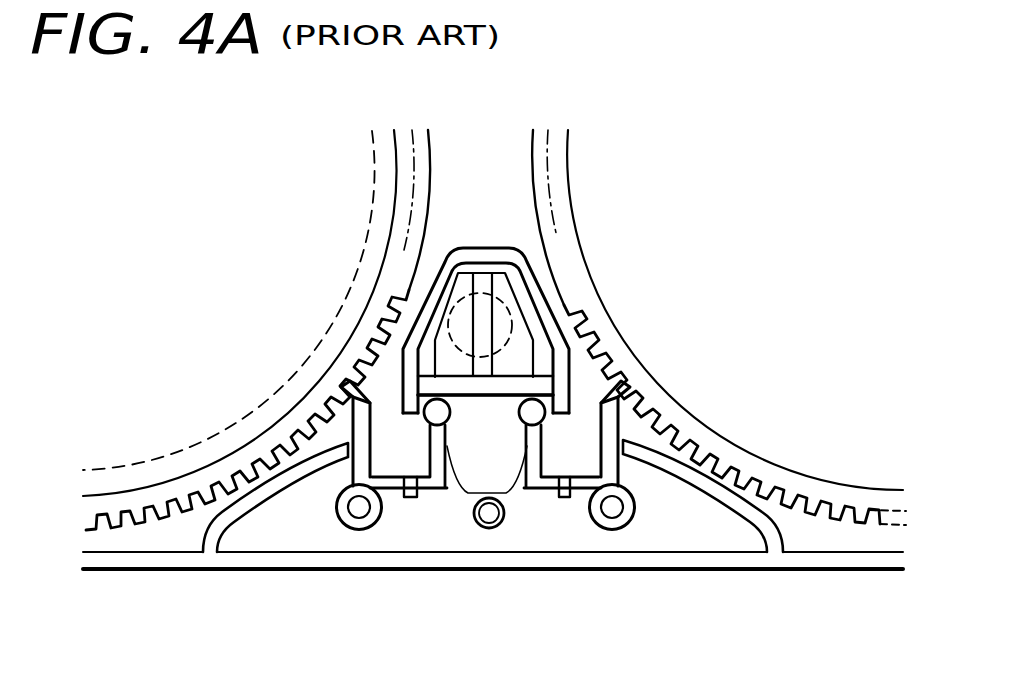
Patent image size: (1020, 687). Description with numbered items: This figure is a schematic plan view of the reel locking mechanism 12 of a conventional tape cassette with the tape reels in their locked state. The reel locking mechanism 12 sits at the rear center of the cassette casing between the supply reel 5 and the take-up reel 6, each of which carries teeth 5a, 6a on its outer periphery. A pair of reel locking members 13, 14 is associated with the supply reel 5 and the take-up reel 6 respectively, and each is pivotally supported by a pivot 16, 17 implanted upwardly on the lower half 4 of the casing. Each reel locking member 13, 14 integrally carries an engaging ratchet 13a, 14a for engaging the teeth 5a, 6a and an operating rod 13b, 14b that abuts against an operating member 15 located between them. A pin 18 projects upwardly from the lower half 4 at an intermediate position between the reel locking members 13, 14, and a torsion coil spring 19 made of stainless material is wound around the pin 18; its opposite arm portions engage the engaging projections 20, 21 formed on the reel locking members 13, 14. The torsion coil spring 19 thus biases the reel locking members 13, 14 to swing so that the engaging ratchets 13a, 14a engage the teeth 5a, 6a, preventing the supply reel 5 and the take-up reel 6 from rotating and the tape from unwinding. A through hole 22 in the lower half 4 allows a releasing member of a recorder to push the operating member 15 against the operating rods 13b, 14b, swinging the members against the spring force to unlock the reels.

The lower half 4 is at (174, 573).
The supply reel 5 is at (137, 445).
The teeth 5a is at (250, 477).
The take-up reel 6 is at (840, 455).
The teeth 6a is at (757, 480).
The reel locking mechanism 12 is at (494, 183).
The reel locking member 13 is at (278, 478).
The engaging ratchet 13a is at (362, 427).
The operating rod 13b is at (447, 450).
The reel locking member 14 is at (704, 503).
The engaging ratchet 14a is at (704, 395).
The operating rod 14b is at (545, 478).
The operating member 15 is at (440, 333).
The pivot 16 is at (358, 512).
The pivot 17 is at (620, 515).
The pin 18 is at (490, 518).
The torsion coil spring 19 is at (518, 497).
The engaging projection 20 is at (409, 497).
The engaging projection 21 is at (565, 497).
The through hole 22 is at (510, 305).